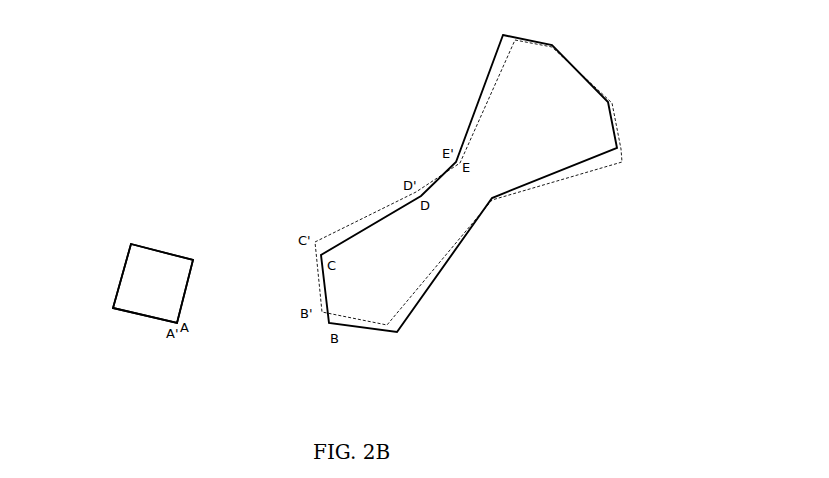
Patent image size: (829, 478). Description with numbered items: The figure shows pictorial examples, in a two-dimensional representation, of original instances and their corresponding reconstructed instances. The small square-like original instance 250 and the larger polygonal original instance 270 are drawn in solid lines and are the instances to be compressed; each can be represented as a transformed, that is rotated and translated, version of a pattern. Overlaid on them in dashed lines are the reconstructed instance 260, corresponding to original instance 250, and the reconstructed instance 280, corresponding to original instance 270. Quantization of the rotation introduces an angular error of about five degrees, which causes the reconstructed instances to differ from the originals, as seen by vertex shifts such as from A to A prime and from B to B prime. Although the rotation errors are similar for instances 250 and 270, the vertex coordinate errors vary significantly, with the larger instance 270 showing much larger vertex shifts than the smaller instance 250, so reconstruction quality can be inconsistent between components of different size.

The original instance 250 is at (128, 250).
The reconstructed instance 260 is at (133, 243).
The original instance 270 is at (598, 157).
The reconstructed instance 280 is at (552, 185).